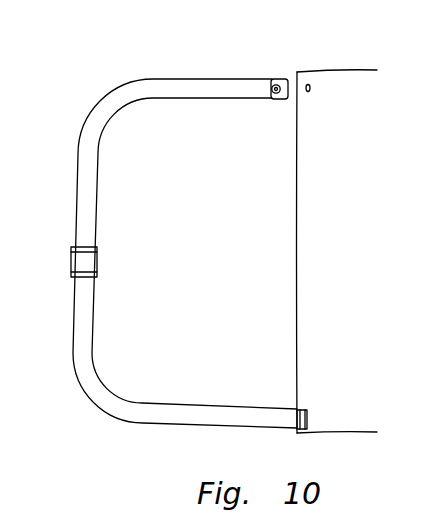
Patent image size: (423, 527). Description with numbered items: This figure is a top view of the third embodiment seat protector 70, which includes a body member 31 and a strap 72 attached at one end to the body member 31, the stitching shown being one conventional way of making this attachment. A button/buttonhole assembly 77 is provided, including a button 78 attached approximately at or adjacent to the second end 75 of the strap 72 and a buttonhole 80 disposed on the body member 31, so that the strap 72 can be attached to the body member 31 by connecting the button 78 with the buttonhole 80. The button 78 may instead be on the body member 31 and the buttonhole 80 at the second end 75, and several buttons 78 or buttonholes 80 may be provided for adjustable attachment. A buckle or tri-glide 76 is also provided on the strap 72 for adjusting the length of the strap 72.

The body member 31 is at (354, 307).
The seat protector 70 is at (281, 249).
The strap 72 is at (97, 132).
The second end 75 is at (286, 80).
The buckle or tri-glide 76 is at (71, 250).
The button/buttonhole assembly 77 is at (308, 107).
The button 78 is at (272, 96).
The buttonhole 80 is at (313, 87).